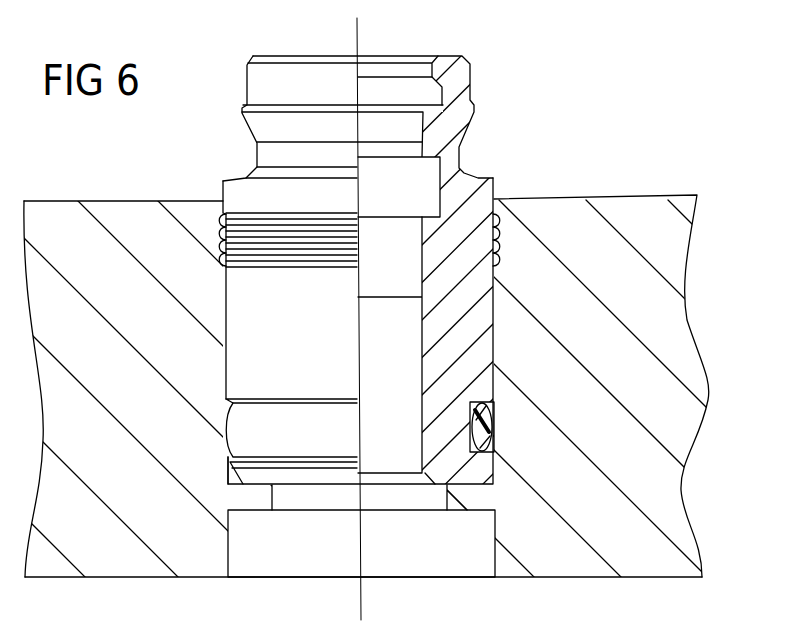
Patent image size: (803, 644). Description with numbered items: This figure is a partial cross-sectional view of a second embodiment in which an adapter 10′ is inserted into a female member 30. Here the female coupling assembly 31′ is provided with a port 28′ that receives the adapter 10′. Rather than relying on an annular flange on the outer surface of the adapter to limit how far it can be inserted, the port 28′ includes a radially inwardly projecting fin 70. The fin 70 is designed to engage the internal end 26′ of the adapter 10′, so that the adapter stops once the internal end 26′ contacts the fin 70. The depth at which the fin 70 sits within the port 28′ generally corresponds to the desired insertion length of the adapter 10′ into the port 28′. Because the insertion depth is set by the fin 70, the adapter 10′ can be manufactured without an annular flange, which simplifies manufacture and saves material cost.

The adapter 10′ is at (410, 310).
The female coupling assembly 31′ is at (522, 78).
The female member 30 is at (700, 264).
The port 28′ is at (341, 557).
The internal end 26′ is at (288, 488).
The fin 70 is at (472, 498).